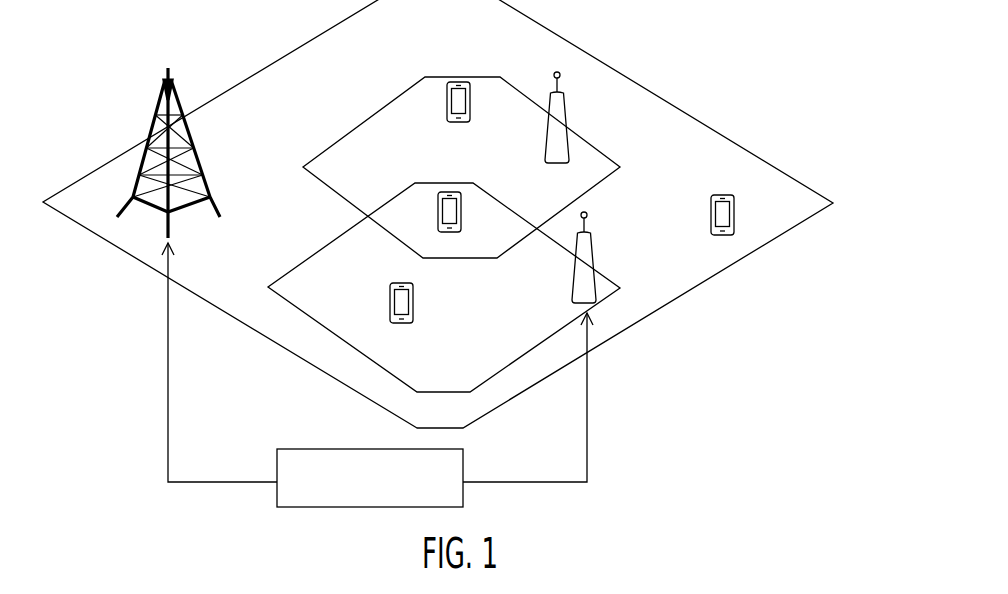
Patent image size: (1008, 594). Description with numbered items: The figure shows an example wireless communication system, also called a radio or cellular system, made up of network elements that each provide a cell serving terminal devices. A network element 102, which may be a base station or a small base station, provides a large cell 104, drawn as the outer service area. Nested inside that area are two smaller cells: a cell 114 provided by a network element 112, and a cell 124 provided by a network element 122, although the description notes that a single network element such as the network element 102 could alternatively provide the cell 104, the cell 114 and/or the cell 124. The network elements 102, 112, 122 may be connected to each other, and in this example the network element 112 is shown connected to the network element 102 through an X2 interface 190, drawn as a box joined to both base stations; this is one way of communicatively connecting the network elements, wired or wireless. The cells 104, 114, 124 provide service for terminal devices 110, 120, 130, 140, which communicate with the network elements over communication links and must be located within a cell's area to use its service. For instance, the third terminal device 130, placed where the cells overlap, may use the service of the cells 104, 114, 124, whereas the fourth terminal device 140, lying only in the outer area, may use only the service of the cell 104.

The network element 102 is at (163, 94).
The cell 104 is at (92, 220).
The terminal device 110 is at (406, 323).
The network element 112 is at (591, 237).
The cell 114 is at (313, 275).
The terminal device 120 is at (452, 122).
The network element 122 is at (564, 100).
The cell 124 is at (372, 133).
The third terminal device 130 is at (450, 233).
The fourth terminal device 140 is at (723, 237).
The X2 interface 190 is at (317, 492).